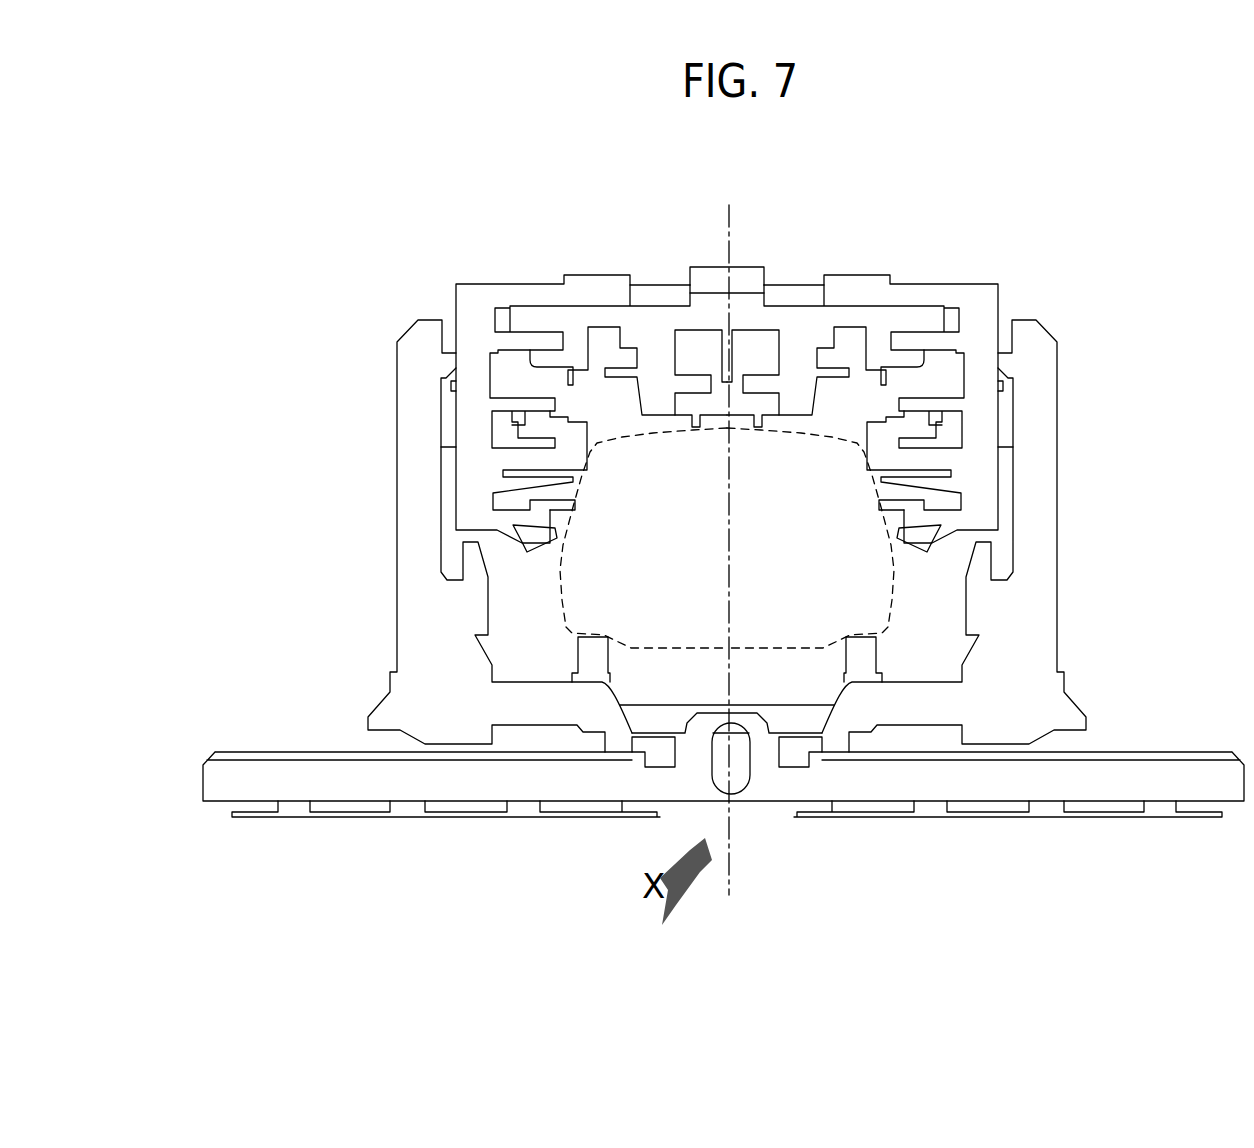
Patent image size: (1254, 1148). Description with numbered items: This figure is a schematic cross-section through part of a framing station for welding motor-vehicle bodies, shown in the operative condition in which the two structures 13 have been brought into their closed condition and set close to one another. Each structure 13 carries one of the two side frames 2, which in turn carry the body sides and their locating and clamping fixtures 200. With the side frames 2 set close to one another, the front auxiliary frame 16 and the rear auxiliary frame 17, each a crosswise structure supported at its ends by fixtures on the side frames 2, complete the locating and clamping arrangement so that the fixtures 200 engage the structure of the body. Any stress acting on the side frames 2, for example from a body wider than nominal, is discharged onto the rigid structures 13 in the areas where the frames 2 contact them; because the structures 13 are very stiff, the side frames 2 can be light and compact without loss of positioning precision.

The side frame 2 is at (452, 296).
The structure 13 is at (389, 558).
The front auxiliary frame 16 is at (772, 272).
The rear auxiliary frame 17 is at (792, 392).
The locating and clamping fixtures 200 is at (545, 552).